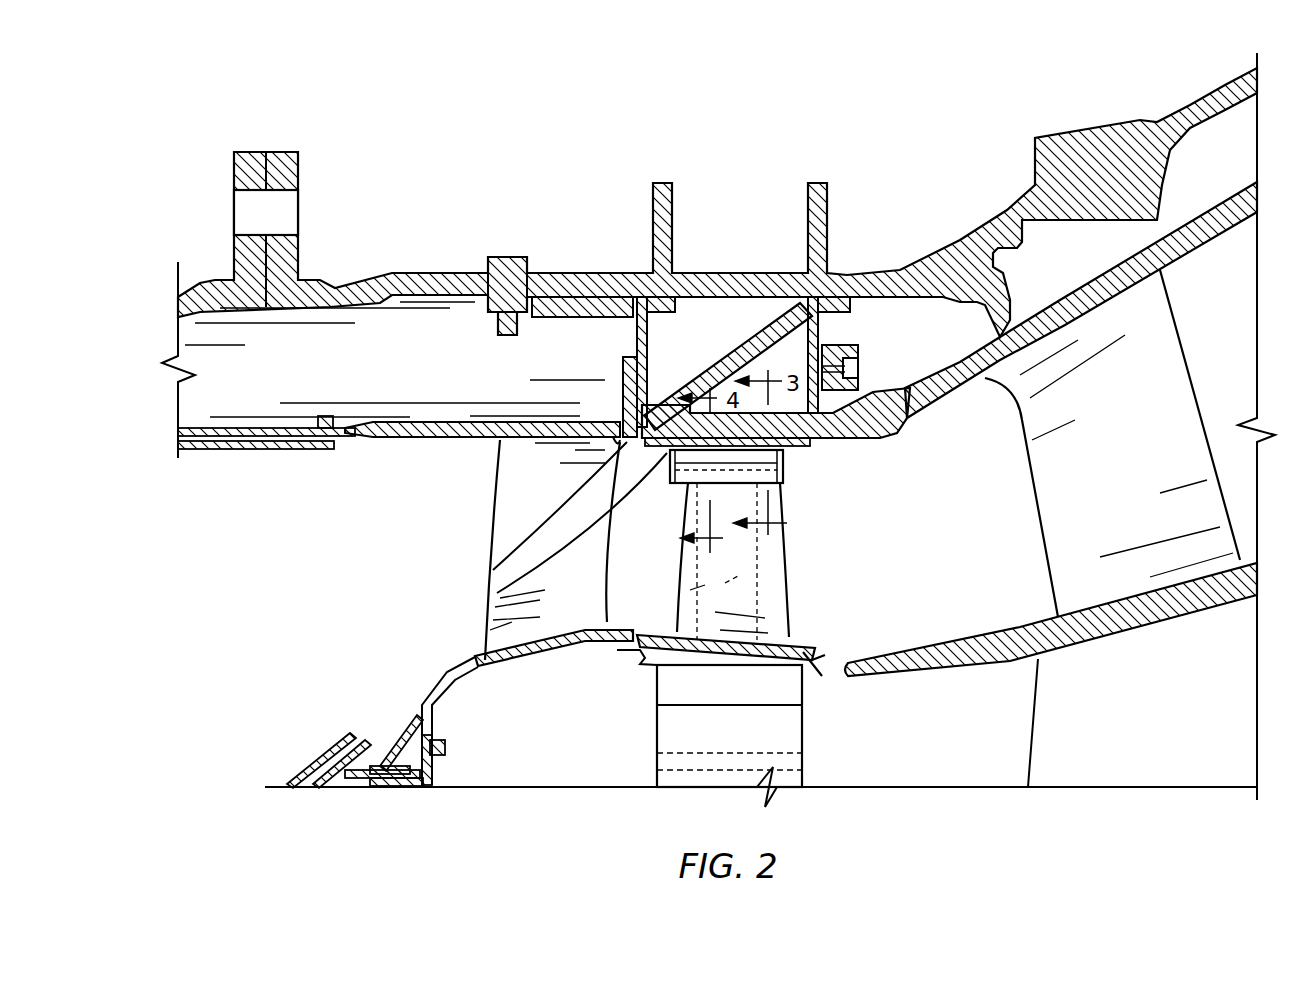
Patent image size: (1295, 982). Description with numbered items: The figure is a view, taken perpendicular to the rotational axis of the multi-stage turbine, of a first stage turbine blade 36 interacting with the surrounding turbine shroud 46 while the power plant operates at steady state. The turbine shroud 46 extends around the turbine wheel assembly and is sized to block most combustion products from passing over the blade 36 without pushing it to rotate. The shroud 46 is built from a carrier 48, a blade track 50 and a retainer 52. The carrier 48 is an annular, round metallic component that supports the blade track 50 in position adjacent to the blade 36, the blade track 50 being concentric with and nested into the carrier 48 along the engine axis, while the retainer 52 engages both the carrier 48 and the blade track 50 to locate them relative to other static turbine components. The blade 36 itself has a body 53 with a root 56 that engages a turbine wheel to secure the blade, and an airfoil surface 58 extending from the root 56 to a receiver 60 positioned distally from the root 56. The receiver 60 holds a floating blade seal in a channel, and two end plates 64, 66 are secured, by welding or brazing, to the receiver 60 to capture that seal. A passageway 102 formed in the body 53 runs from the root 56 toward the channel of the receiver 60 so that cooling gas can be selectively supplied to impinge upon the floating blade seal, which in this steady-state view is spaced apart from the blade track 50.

The blade 36 is at (828, 612).
The turbine shroud 46 is at (876, 234).
The carrier 48 is at (720, 352).
The blade track 50 is at (500, 537).
The retainer 52 is at (870, 440).
The body 53 is at (800, 587).
The root 56 is at (790, 735).
The airfoil surface 58 is at (729, 563).
The receiver 60 is at (690, 480).
The end plate 64 is at (507, 588).
The end plate 66 is at (778, 464).
The passageway 102 is at (725, 583).